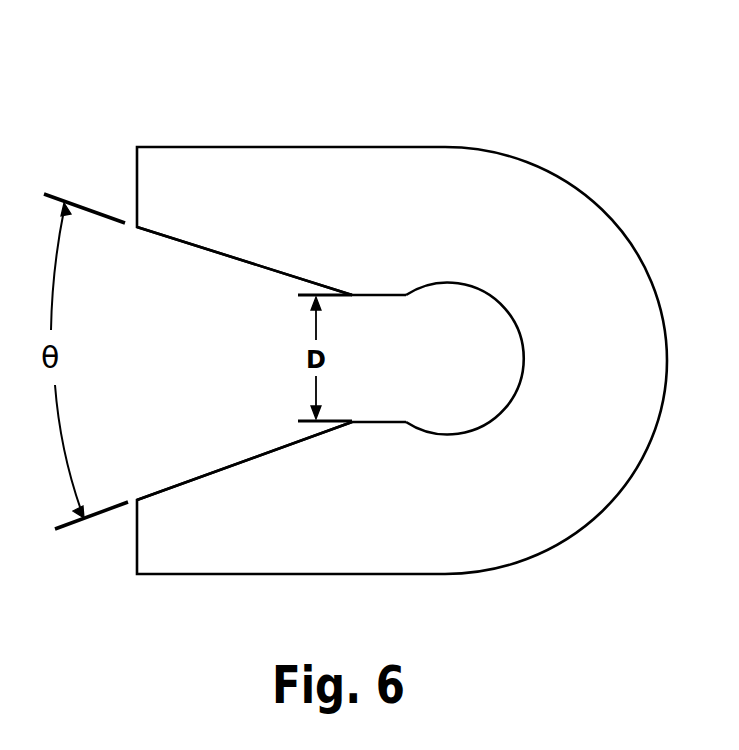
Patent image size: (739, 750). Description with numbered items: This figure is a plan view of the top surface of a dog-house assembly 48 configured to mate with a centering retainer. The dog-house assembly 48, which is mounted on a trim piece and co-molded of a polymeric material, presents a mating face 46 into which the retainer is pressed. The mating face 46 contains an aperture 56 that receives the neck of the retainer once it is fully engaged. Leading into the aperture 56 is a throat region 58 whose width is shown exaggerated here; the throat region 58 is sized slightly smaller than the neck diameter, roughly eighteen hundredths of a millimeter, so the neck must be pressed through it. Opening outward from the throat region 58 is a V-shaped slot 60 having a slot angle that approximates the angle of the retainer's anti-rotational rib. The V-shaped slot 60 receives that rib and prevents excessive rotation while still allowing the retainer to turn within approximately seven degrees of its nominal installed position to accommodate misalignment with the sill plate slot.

The dog-house assembly 48 is at (355, 293).
The mating face 46 is at (320, 185).
The aperture 56 is at (480, 292).
The throat region 58 is at (386, 295).
The V-shaped slot 60 is at (177, 236).